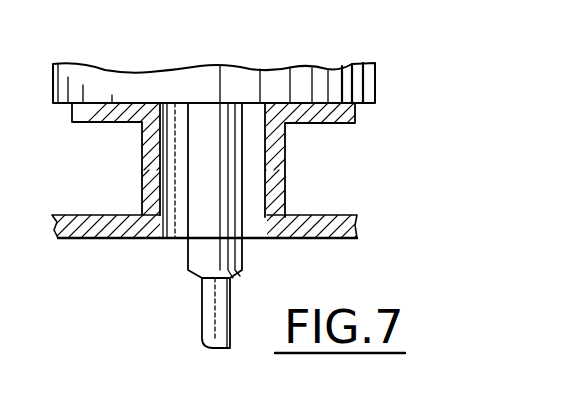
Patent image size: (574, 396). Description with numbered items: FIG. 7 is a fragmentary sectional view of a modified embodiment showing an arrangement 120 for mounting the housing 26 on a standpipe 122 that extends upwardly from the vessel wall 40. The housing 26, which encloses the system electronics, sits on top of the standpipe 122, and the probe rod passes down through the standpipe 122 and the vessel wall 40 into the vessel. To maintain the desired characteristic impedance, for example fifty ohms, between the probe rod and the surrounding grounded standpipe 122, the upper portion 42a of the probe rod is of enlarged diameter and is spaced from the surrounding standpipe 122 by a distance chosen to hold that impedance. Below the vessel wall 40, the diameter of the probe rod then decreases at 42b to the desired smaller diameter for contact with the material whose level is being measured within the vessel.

The housing 26 is at (378, 74).
The arrangement 120 is at (360, 148).
The standpipe 122 is at (148, 160).
The vessel wall 40 is at (323, 222).
The upper portion of the probe rod 42a is at (203, 240).
The reduced-diameter portion of the probe rod 42b is at (212, 295).